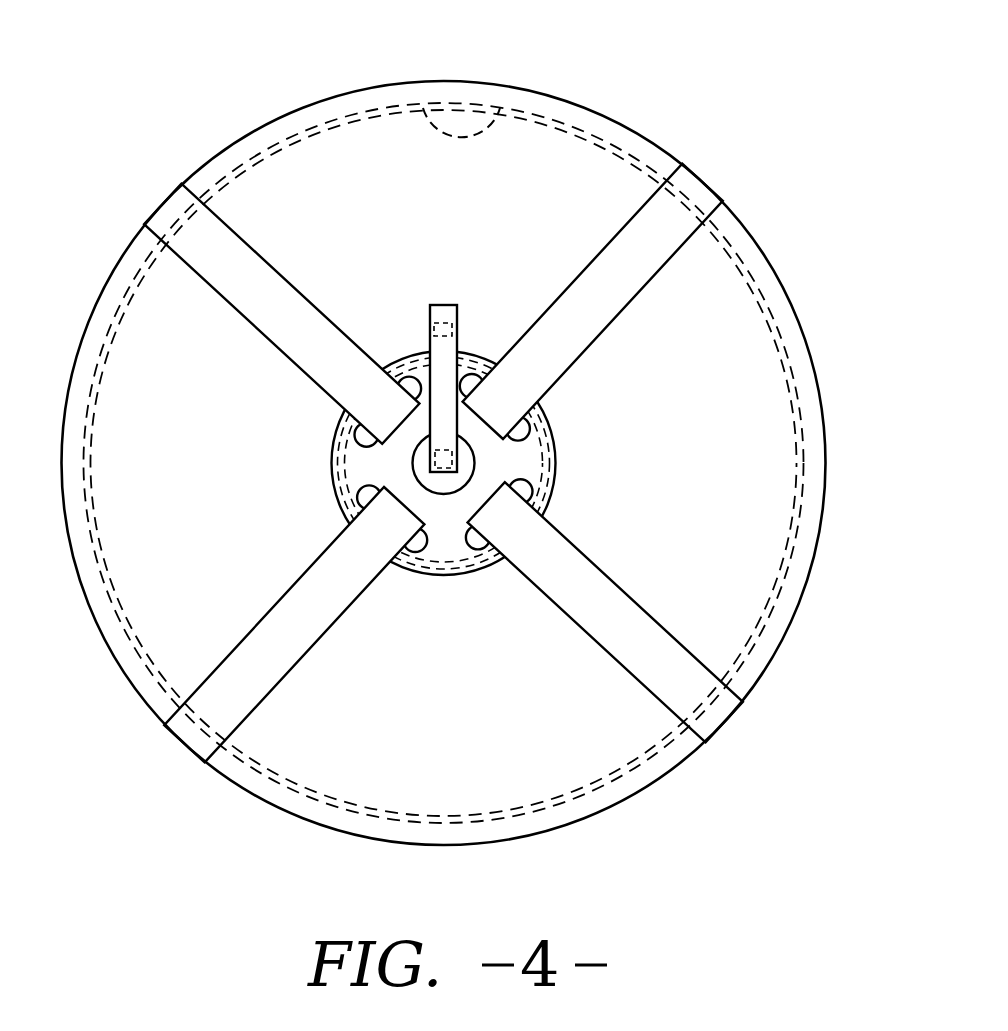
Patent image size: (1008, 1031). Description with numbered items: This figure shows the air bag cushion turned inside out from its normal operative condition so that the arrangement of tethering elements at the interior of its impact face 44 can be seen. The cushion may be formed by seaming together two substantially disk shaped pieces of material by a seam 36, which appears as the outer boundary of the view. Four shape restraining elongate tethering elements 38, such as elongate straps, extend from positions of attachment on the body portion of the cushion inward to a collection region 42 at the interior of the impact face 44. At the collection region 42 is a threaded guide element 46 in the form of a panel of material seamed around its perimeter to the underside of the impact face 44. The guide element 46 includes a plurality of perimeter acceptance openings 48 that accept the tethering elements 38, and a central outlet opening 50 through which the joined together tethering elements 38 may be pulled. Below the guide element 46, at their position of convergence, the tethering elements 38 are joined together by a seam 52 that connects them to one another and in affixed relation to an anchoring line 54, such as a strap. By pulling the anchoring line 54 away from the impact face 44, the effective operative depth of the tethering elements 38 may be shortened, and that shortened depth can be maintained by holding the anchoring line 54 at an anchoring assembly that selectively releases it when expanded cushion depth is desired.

The seam 36 is at (507, 100).
The tethering elements 38 is at (223, 217).
The collection region 42 is at (444, 408).
The impact face 44 is at (697, 303).
The guide element 46 is at (447, 548).
The perimeter acceptance openings 48 is at (357, 488).
The central outlet opening 50 is at (426, 483).
The seam 52 is at (437, 460).
The anchoring line 54 is at (433, 305).